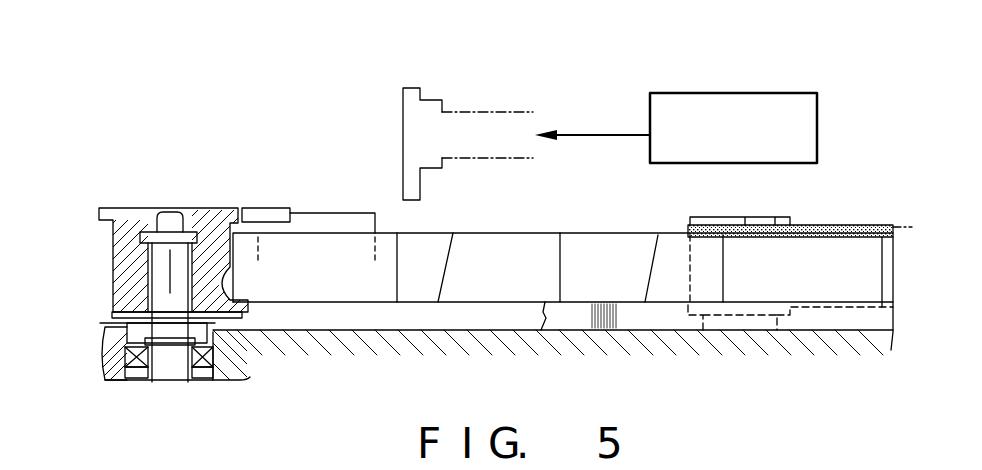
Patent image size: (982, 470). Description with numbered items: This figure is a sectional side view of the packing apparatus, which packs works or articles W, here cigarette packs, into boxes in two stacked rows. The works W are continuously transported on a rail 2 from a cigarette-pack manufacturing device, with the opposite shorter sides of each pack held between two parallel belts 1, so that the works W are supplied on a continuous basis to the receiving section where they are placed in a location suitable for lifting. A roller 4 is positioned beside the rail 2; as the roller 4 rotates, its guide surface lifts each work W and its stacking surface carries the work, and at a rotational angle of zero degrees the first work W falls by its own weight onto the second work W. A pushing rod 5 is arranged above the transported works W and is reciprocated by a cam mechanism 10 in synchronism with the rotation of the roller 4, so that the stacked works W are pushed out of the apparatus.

The belt 1 is at (832, 225).
The rail 2 is at (493, 325).
The roller 4 is at (142, 192).
The pushing rod 5 is at (403, 138).
The cam mechanism 10 is at (747, 93).
The work W is at (542, 247).